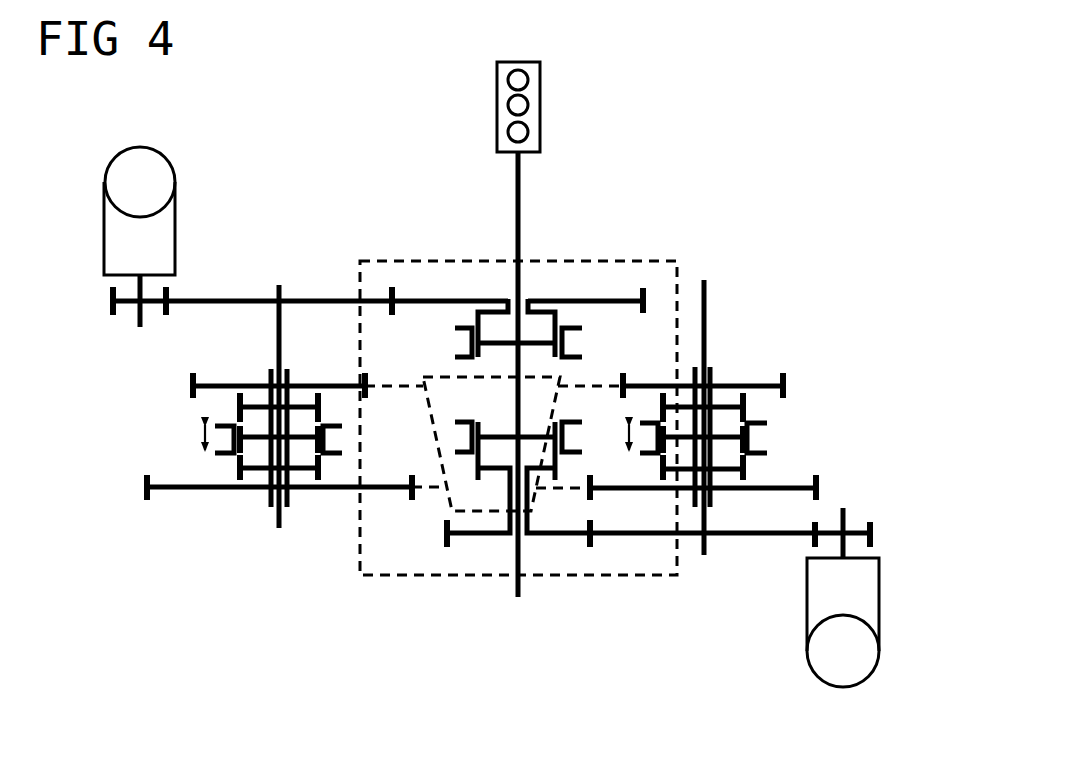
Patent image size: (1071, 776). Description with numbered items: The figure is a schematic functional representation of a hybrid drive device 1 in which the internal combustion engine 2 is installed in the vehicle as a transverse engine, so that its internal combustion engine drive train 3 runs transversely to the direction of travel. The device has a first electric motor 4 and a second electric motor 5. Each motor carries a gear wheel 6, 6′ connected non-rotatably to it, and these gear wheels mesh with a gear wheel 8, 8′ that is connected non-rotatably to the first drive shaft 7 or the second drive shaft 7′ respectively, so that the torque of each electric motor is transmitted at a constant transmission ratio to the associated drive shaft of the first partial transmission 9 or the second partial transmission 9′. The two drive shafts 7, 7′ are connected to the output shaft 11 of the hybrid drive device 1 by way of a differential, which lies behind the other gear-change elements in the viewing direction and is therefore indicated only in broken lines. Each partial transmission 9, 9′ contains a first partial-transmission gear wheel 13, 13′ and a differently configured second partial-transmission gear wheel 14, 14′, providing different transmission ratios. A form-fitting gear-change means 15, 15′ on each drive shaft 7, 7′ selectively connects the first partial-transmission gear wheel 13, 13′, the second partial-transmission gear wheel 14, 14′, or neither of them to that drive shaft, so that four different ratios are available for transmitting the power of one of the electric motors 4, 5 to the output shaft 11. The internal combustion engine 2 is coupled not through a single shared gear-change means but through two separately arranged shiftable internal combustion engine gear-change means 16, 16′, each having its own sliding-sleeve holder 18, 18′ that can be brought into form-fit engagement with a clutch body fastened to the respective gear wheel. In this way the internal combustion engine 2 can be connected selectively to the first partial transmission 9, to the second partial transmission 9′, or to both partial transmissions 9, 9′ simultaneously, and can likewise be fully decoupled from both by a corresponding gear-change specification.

The hybrid drive device 1 is at (770, 126).
The internal combustion engine 2 is at (542, 95).
The internal combustion engine drive train 3 is at (521, 186).
The first electric motor 4 is at (880, 591).
The second electric motor 5 is at (103, 230).
The gear wheel 6 is at (857, 531).
The gear wheel 6′ is at (127, 305).
The first drive shaft 7 is at (706, 282).
The second drive shaft 7′ is at (287, 287).
The gear wheel 8 is at (768, 538).
The gear wheel 8′ is at (229, 298).
The first partial transmission 9 is at (812, 332).
The second partial transmission 9′ is at (250, 506).
The output shaft 11 is at (490, 374).
The first partial-transmission gear wheel 13 is at (763, 383).
The first partial-transmission gear wheel 13′ is at (212, 383).
The second partial-transmission gear wheel 14 is at (795, 487).
The second partial-transmission gear wheel 14′ is at (165, 490).
The gear-change means 15 is at (784, 427).
The gear-change means 15′ is at (185, 429).
The internal combustion engine gear-change means 16 is at (565, 460).
The internal combustion engine gear-change means 16′ is at (592, 332).
The sliding-sleeve holder 18 is at (498, 440).
The sliding-sleeve holder 18′ is at (537, 340).